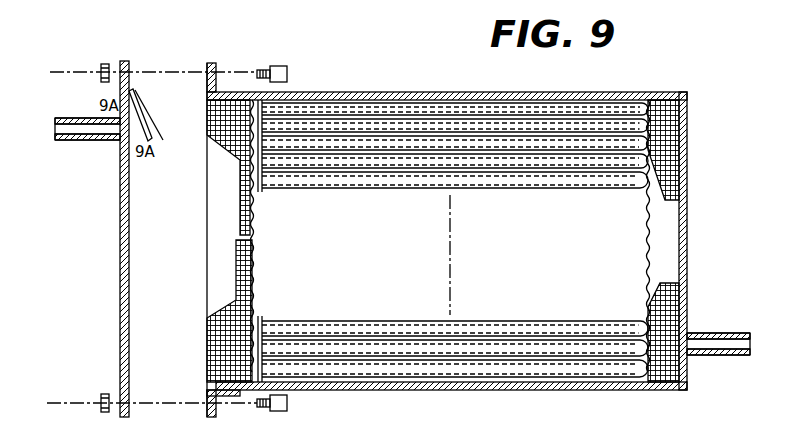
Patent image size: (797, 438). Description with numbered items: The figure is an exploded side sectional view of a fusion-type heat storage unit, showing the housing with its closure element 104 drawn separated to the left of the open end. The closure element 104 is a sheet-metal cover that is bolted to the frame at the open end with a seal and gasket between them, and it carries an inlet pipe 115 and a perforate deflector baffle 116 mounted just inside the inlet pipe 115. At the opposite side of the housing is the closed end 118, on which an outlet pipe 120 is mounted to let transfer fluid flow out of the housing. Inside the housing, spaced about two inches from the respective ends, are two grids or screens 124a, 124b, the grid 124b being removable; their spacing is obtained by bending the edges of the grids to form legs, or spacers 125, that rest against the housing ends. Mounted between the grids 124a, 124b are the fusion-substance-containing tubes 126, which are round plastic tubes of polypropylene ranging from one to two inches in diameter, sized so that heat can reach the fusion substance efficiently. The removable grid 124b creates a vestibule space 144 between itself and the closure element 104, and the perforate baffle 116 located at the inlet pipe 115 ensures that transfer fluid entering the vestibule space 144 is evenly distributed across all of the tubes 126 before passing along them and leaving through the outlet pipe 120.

The closure element 104 is at (120, 246).
The inlet pipe 115 is at (55, 128).
The perforate deflector baffle 116 is at (137, 108).
The closed end 118 is at (687, 282).
The outlet pipe 120 is at (738, 333).
The grid 124a is at (684, 137).
The grid 124b is at (247, 127).
The spacers 125 is at (218, 102).
The fusion-substance-containing tubes 126 is at (648, 185).
The vestibule space 144 is at (238, 97).